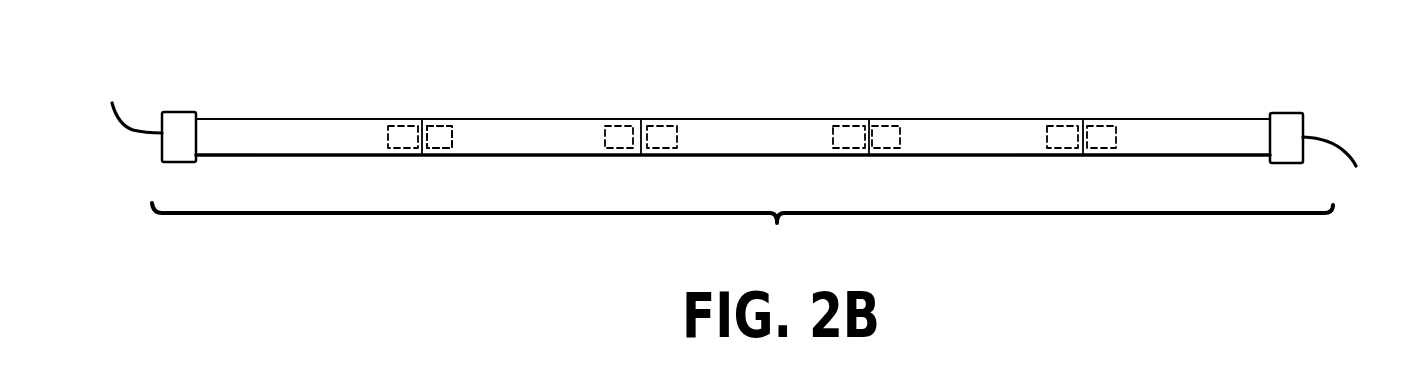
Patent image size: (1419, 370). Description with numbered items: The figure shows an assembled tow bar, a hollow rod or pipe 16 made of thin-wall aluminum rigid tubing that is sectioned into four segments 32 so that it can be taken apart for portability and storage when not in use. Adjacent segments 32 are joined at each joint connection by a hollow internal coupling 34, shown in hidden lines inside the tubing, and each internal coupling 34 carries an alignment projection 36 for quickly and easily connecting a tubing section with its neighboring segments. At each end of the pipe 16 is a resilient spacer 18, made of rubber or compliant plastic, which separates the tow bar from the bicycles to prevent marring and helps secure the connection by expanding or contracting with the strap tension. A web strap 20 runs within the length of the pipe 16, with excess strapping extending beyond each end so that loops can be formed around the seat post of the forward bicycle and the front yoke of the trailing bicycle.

The hollow rod or pipe 16 is at (742, 233).
The resilient spacer 18 is at (180, 112).
The web strap 20 is at (123, 116).
The segment 32 is at (292, 119).
The internal coupling 34 is at (410, 127).
The alignment projection 36 is at (435, 140).